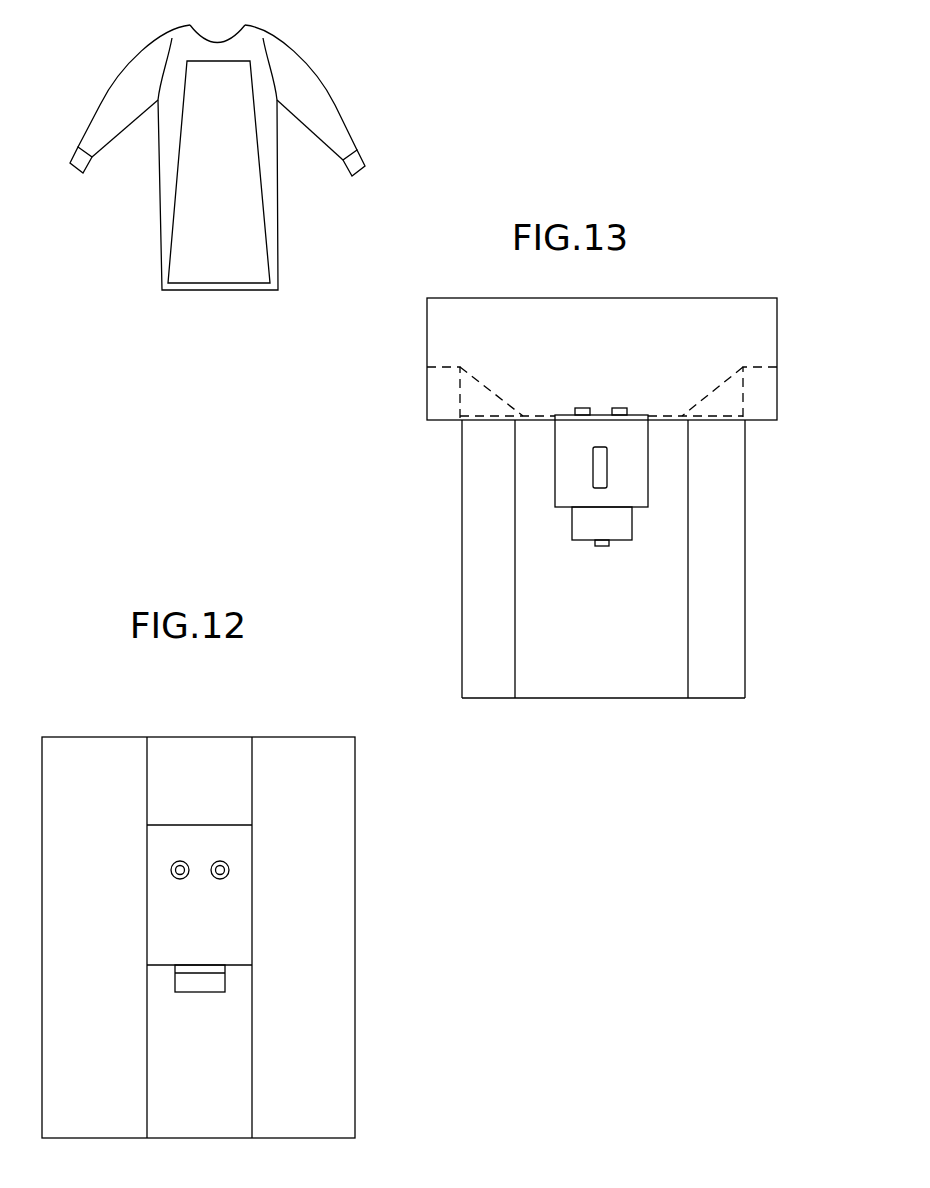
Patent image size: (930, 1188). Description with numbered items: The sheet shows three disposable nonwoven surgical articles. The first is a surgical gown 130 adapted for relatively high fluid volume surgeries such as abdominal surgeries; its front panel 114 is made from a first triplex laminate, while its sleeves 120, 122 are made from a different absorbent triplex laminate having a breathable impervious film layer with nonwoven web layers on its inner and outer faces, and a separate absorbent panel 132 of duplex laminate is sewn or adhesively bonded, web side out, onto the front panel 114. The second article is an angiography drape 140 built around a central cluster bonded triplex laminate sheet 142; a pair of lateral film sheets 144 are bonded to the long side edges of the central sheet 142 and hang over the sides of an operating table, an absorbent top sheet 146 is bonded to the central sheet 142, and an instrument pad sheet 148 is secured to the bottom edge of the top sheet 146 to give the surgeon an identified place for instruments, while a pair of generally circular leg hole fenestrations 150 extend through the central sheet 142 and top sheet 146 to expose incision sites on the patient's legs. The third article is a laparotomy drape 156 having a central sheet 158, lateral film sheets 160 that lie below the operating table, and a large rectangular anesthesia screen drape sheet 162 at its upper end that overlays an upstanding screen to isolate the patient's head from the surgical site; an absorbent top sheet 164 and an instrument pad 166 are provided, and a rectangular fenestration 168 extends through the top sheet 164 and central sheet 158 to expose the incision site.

In FIG. 11, the front panel 114 is at (265, 130).
In FIG. 11, the sleeve 120 is at (120, 97).
In FIG. 11, the sleeve 122 is at (303, 83).
In FIG. 11, the gown 130 is at (145, 225).
In FIG. 11, the absorbent panel 132 is at (233, 223).
In FIG. 12, the angiography drape 140 is at (368, 960).
In FIG. 12, the central sheet 142 is at (222, 753).
In FIG. 12, the lateral film sheets 144 is at (100, 760).
In FIG. 12, the absorbent top sheet 146 is at (207, 922).
In FIG. 12, the instrument pad sheet 148 is at (207, 982).
In FIG. 12, the leg hole fenestrations 150 is at (220, 860).
In FIG. 13, the laparotomy drape 156 is at (452, 535).
In FIG. 13, the central sheet 158 is at (668, 483).
In FIG. 13, the lateral film sheets 160 is at (483, 645).
In FIG. 13, the anesthesia screen drape sheet 162 is at (702, 308).
In FIG. 13, the absorbent top sheet 164 is at (570, 482).
In FIG. 13, the instrument pad 166 is at (615, 520).
In FIG. 13, the rectangular fenestration 168 is at (596, 478).